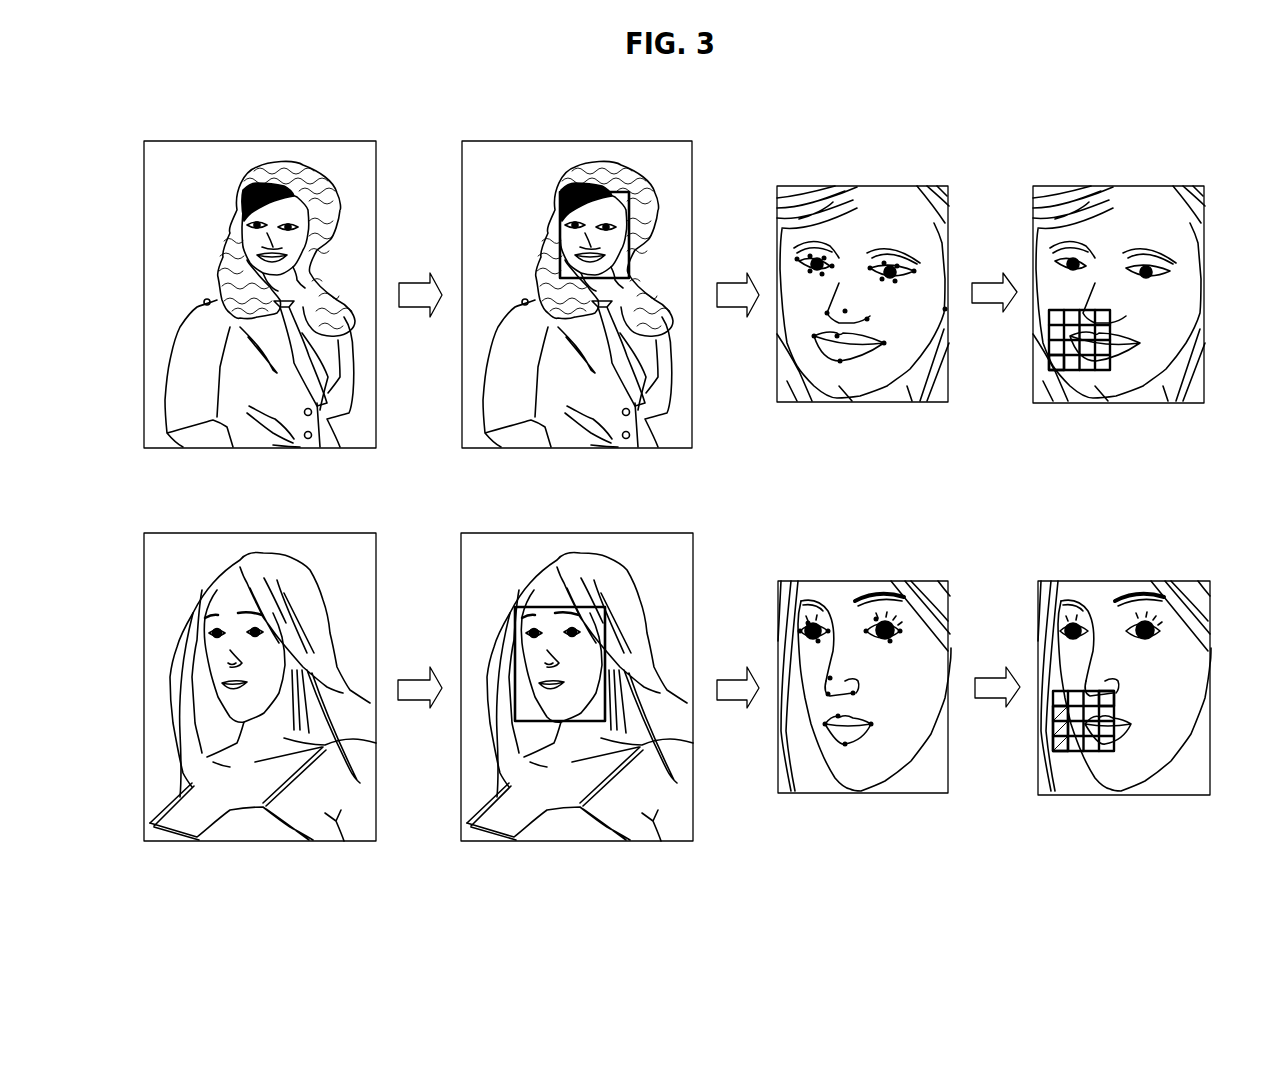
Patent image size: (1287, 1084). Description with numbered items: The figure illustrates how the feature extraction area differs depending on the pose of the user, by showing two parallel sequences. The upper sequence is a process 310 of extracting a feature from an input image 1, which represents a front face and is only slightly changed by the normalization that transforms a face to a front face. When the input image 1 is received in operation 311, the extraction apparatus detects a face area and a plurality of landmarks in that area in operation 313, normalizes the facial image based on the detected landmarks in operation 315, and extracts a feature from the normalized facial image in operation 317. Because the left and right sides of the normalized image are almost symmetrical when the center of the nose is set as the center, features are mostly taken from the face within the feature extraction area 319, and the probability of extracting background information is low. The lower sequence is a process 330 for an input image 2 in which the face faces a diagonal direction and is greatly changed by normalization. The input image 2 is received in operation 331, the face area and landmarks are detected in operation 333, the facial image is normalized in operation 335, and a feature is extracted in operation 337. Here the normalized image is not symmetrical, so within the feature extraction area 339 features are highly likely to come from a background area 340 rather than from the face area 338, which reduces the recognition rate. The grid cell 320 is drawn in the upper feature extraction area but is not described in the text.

The input image 1 is at (143, 263).
The input image 2 is at (142, 652).
The process 310 is at (112, 312).
The operation 311 is at (262, 141).
The operation 313 is at (576, 141).
The operation 315 is at (866, 186).
The operation 317 is at (1120, 186).
The feature extraction area 319 is at (1087, 371).
The sub-block of first mouth region block 320 is at (1049, 360).
The process 330 is at (112, 706).
The operation 331 is at (262, 533).
The operation 333 is at (576, 533).
The operation 335 is at (866, 581).
The operation 337 is at (1125, 581).
The face area 338 is at (1110, 700).
The feature extraction area 339 is at (1088, 752).
The background area 340 is at (1055, 728).